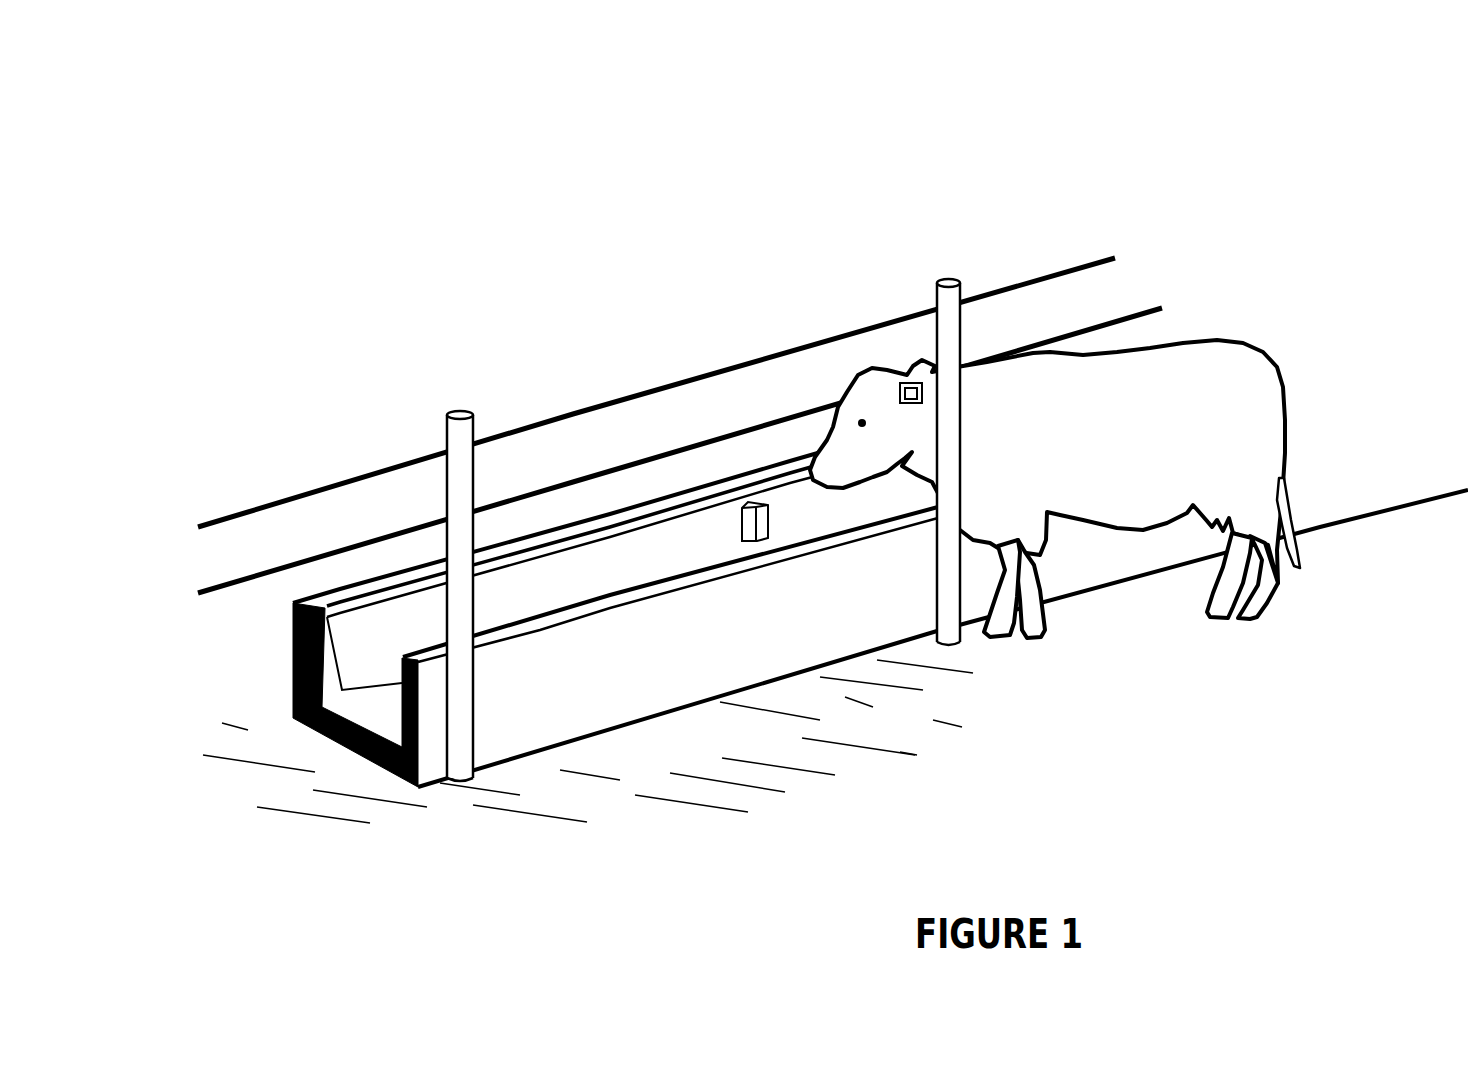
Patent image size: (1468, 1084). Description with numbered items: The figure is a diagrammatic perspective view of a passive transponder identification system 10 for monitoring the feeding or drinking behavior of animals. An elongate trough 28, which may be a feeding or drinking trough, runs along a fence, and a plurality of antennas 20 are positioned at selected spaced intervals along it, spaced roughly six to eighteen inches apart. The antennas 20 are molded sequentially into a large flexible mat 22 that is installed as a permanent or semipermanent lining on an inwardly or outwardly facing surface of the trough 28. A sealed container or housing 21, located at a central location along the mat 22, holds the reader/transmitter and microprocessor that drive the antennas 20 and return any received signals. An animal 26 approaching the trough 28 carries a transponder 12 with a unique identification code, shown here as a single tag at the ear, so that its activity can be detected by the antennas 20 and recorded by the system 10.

The passive transponder identification system 10 is at (804, 522).
The transponder 12 is at (928, 408).
The antennas 20 is at (585, 560).
The sealed container or housing 21 is at (746, 504).
The flexible mat 22 is at (368, 660).
The animal 26 is at (1283, 370).
The elongate trough 28 is at (804, 649).